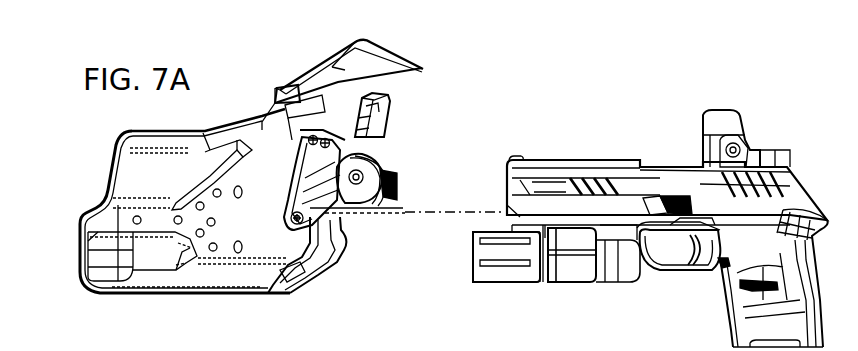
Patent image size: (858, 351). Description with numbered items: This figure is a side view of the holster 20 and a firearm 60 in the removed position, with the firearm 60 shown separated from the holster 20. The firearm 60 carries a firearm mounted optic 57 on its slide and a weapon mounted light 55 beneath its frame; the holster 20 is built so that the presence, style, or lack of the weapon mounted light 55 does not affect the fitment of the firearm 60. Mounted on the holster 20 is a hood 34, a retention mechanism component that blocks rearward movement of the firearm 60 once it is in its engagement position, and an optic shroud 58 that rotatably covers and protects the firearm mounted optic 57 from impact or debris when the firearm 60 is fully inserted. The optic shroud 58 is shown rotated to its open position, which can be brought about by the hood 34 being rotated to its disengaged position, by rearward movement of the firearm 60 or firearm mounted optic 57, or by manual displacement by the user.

The holster 20 is at (190, 306).
The hood 34 is at (393, 133).
The optic shroud 58 is at (423, 73).
The firearm mounted optic 57 is at (700, 112).
The weapon mounted light 55 is at (563, 262).
The firearm 60 is at (706, 208).